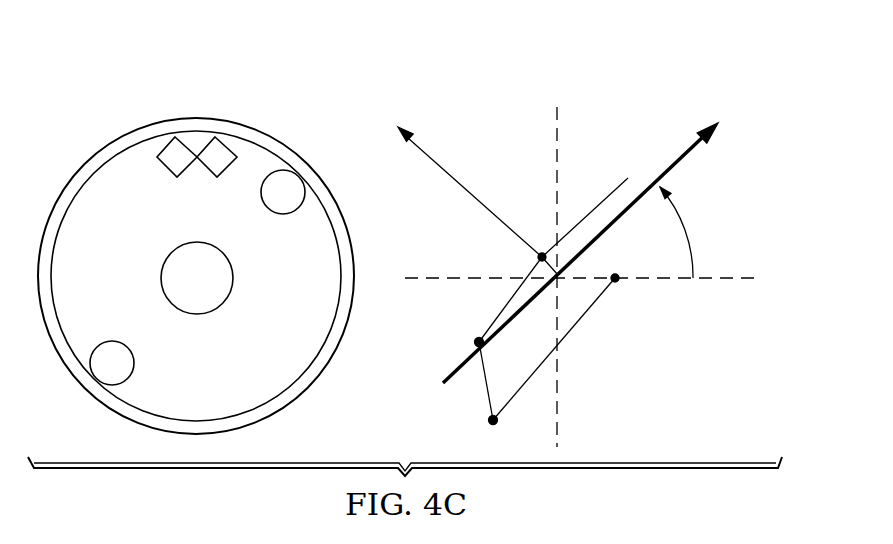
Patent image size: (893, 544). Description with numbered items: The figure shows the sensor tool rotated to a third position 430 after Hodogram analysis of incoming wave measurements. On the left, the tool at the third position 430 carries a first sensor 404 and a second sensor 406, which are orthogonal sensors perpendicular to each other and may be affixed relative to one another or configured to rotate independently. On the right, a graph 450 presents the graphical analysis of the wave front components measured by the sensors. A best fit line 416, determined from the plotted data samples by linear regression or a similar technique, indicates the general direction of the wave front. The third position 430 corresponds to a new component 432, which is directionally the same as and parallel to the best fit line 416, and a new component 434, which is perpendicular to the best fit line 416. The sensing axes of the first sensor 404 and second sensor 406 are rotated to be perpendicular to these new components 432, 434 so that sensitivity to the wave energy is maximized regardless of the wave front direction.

The third position 430 is at (196, 245).
The first sensor 404 is at (163, 172).
The second sensor 406 is at (232, 167).
The graph 450 is at (548, 241).
The new component 432 is at (688, 158).
The new component 434 is at (483, 202).
The best fit line 416 is at (457, 368).